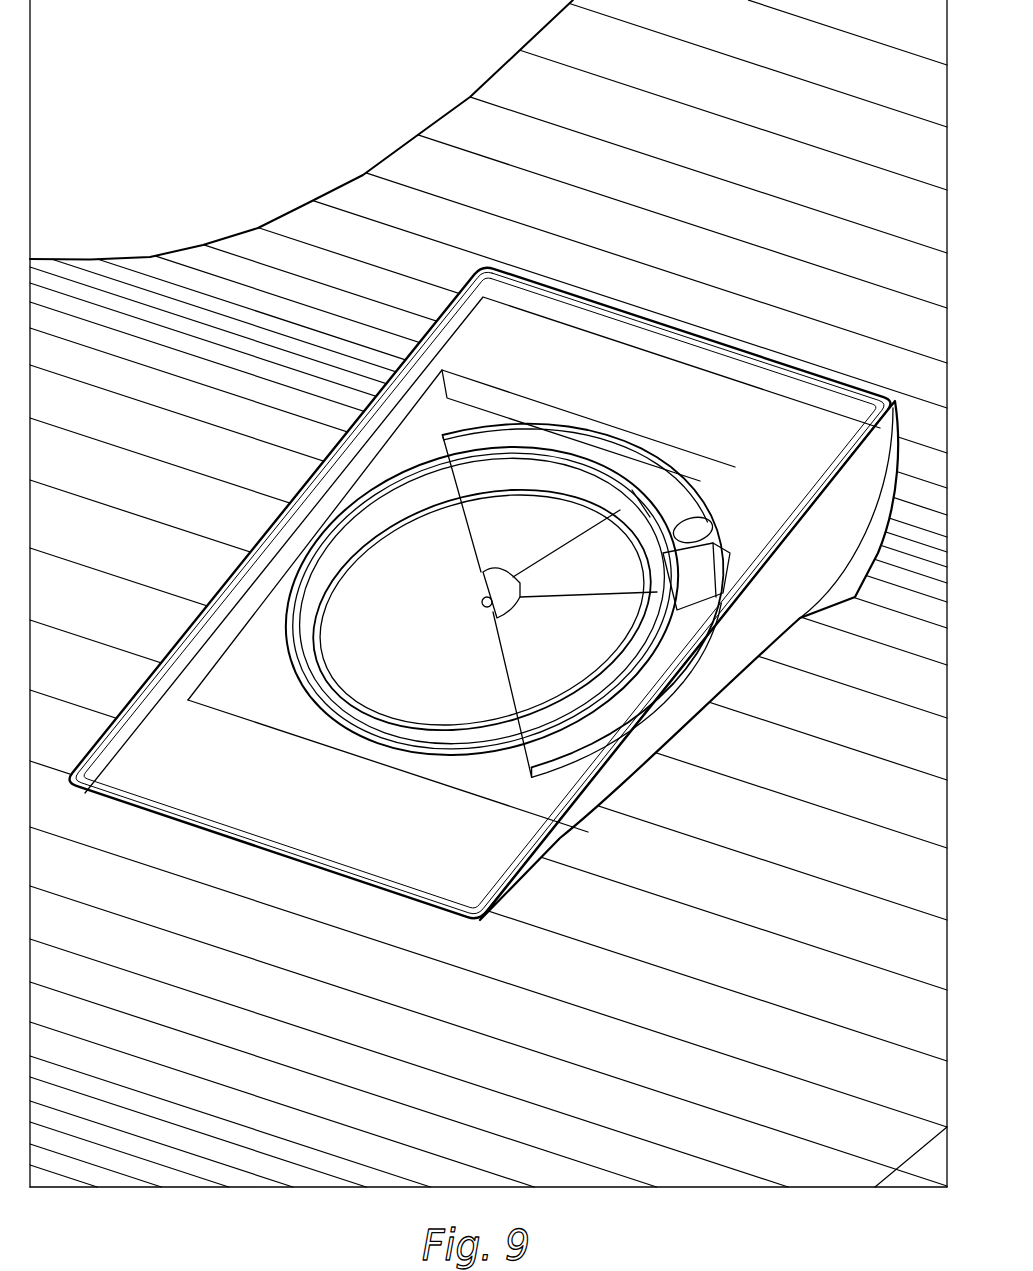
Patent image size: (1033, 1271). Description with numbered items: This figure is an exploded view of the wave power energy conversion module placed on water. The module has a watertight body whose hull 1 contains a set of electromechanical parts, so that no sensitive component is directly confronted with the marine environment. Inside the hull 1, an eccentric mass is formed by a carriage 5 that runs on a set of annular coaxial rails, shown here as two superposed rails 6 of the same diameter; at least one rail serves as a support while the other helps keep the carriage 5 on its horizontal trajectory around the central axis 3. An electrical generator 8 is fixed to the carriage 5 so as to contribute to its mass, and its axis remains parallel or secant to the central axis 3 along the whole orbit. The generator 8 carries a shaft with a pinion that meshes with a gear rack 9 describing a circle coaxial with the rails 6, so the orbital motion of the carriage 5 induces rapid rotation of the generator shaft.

The hull 1 is at (703, 330).
The central axis 3 is at (478, 598).
The carriage 5 is at (573, 572).
The rails 6 is at (319, 647).
The electrical generator 8 is at (719, 519).
The gear rack 9 is at (393, 753).